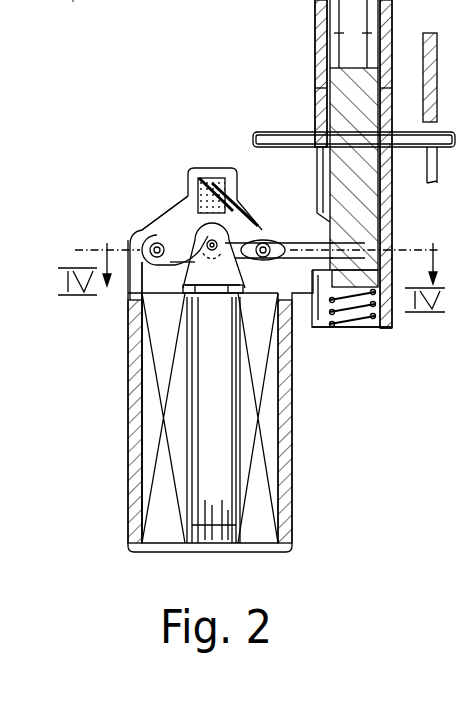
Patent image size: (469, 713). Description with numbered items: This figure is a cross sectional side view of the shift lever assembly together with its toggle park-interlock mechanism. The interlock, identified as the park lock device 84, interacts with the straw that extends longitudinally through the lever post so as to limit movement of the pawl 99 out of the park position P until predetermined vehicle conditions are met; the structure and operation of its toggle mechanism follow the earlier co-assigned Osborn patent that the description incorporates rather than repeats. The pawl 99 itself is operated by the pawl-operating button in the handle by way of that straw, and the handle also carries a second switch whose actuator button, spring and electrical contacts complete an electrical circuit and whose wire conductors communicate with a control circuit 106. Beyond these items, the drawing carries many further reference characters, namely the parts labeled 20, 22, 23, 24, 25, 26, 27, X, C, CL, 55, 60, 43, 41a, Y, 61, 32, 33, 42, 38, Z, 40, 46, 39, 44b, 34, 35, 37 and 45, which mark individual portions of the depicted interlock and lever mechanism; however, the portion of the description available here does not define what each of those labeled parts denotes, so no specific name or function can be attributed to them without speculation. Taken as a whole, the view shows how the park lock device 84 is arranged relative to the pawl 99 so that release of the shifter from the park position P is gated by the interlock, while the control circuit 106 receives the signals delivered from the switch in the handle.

The control circuit 106 is at (49, 15).
The cylinder tube 20 is at (391, 332).
The outer tube wall 22 is at (393, 87).
The tube wall 23 is at (316, 98).
The pivot pin 24 is at (263, 243).
The arm 25 is at (362, 258).
The piston 26 is at (343, 215).
The arm end 27 is at (356, 246).
The pawl 99 is at (276, 132).
The park position P is at (434, 97).
The tube bottom X is at (393, 326).
The center line C is at (378, 272).
The center line CL is at (91, 269).
The block 55 is at (212, 180).
The housing 60 is at (187, 197).
The housing side 43 is at (237, 200).
The link 41a is at (170, 207).
The direction Y is at (229, 130).
The arm edge 61 is at (156, 203).
The lever arm 32 is at (162, 212).
The bracket 33 is at (140, 230).
The pivot 42 is at (150, 250).
The center block 38 is at (175, 297).
The point Z is at (165, 267).
The base 40 is at (182, 318).
The plate 46 is at (230, 295).
The arm 39 is at (258, 262).
The axis 44b is at (280, 312).
The container 34 is at (128, 412).
The container wall 35 is at (160, 368).
The braces 37 is at (207, 437).
The inner cylinder 45 is at (207, 300).
The park lock device 84 is at (296, 413).